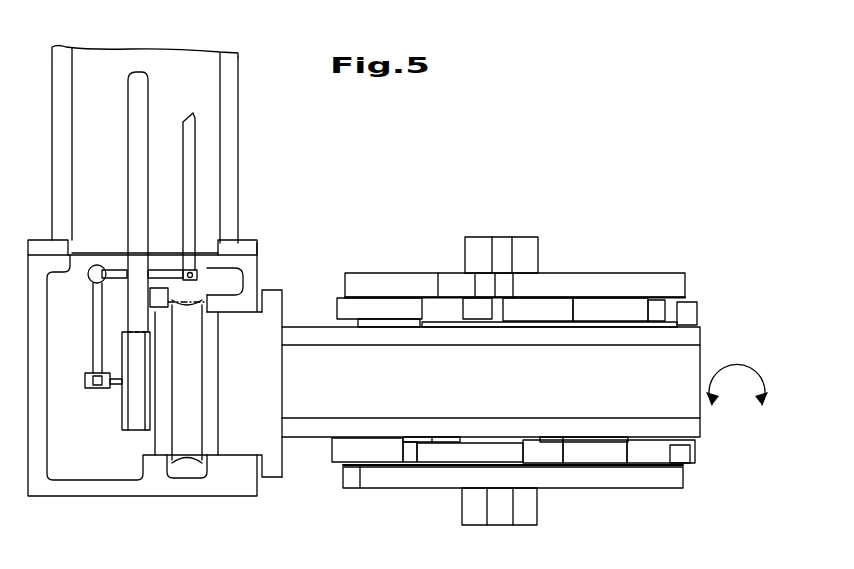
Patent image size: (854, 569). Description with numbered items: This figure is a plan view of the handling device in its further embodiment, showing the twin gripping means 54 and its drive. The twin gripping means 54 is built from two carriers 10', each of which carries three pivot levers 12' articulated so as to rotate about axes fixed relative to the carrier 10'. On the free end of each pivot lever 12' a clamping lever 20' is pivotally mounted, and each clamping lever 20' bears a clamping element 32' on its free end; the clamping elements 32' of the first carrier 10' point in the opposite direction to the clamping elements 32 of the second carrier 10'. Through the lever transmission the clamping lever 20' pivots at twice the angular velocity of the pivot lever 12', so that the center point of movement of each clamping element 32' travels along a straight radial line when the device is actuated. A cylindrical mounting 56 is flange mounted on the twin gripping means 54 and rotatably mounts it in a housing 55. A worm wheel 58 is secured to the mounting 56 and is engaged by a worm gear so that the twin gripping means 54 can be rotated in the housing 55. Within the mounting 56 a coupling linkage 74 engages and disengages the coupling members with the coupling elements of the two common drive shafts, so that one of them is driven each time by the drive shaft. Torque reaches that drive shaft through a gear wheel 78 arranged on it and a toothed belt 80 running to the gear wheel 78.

The carrier 10' is at (491, 375).
The pivot lever 12' is at (514, 378).
The clamping lever 20' is at (514, 378).
The clamping element 32 is at (499, 526).
The clamping element 32' is at (501, 230).
The twin gripping means 54 is at (707, 341).
The housing 55 is at (100, 500).
The cylindrical mounting 56 is at (237, 430).
The worm wheel 58 is at (185, 448).
The coupling linkage 74 is at (89, 291).
The gear wheel 78 is at (118, 402).
The toothed belt 80 is at (138, 102).